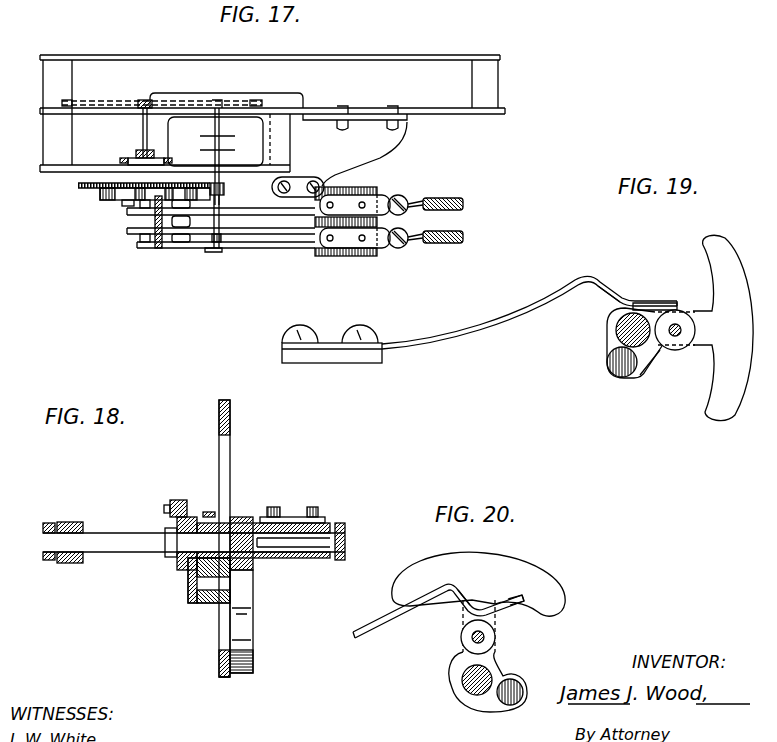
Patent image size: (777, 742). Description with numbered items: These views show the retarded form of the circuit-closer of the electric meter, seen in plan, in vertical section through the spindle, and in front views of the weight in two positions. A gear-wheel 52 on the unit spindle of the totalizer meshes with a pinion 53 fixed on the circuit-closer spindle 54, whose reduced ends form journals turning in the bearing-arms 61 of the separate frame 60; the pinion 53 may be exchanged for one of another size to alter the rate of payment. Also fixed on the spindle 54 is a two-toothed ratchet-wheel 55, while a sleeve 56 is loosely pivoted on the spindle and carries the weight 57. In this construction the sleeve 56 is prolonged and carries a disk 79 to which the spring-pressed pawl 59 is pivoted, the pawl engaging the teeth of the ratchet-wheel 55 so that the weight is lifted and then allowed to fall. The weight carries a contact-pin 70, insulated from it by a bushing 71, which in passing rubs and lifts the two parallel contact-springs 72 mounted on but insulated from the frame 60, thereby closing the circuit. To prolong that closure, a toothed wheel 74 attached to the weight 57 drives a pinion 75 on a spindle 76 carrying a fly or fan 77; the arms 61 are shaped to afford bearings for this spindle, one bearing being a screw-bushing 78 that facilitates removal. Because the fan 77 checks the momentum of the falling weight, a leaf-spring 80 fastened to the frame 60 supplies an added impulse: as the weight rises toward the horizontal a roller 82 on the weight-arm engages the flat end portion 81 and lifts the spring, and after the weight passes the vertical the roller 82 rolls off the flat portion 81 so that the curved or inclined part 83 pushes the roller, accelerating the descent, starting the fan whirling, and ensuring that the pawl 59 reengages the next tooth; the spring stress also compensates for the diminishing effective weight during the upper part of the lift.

In FIG. 17, the gear-wheel 52 is at (108, 104).
In FIG. 17, the pinion 53 is at (152, 102).
In FIG. 18, the pinion 53 is at (68, 522).
In FIG. 19, the circuit-closer spindle 54 is at (642, 350).
In FIG. 18, the circuit-closer spindle 54 is at (142, 532).
In FIG. 20, the circuit-closer spindle 54 is at (478, 695).
In FIG. 18, the two-toothed ratchet-wheel 55 is at (170, 558).
In FIG. 19, the sleeve 56 is at (614, 340).
In FIG. 18, the sleeve 56 is at (276, 562).
In FIG. 20, the sleeve 56 is at (478, 584).
In FIG. 17, the weight 57 is at (118, 200).
In FIG. 19, the weight 57 is at (723, 327).
In FIG. 18, the weight 57 is at (252, 626).
In FIG. 18, the spring-pressed pawl 59 is at (176, 500).
In FIG. 17, the frame 60 is at (356, 154).
In FIG. 17, the bearing-arms 61 is at (262, 94).
In FIG. 18, the bearing-arms 61 is at (347, 546).
In FIG. 18, the contact-pin 70 is at (322, 517).
In FIG. 19, the bushing 71 is at (610, 368).
In FIG. 20, the bushing 71 is at (500, 706).
In FIG. 17, the contact-springs 72 is at (296, 232).
In FIG. 18, the contact-springs 72 is at (314, 506).
In FIG. 17, the toothed wheel 74 is at (78, 186).
In FIG. 18, the toothed wheel 74 is at (222, 678).
In FIG. 17, the pinion 75 is at (224, 190).
In FIG. 17, the spindle 76 is at (224, 228).
In FIG. 17, the fan 77 is at (215, 152).
In FIG. 17, the screw-bushing 78 is at (212, 252).
In FIG. 18, the disk 79 is at (188, 598).
In FIG. 17, the leaf-spring 80 is at (262, 178).
In FIG. 19, the leaf-spring 80 is at (552, 292).
In FIG. 18, the leaf-spring 80 is at (210, 510).
In FIG. 20, the leaf-spring 80 is at (408, 598).
In FIG. 19, the flat end portion 81 is at (668, 302).
In FIG. 20, the flat end portion 81 is at (518, 598).
In FIG. 19, the roller 82 is at (668, 350).
In FIG. 18, the roller 82 is at (204, 603).
In FIG. 20, the roller 82 is at (496, 640).
In FIG. 19, the curved or inclined part 83 is at (612, 300).
In FIG. 20, the curved or inclined part 83 is at (460, 604).